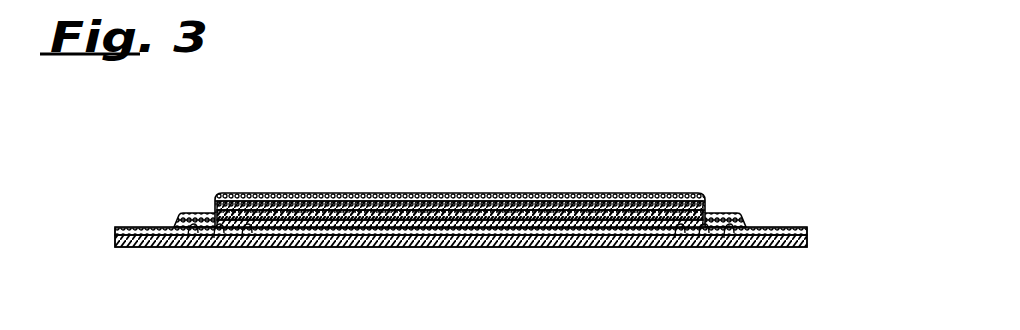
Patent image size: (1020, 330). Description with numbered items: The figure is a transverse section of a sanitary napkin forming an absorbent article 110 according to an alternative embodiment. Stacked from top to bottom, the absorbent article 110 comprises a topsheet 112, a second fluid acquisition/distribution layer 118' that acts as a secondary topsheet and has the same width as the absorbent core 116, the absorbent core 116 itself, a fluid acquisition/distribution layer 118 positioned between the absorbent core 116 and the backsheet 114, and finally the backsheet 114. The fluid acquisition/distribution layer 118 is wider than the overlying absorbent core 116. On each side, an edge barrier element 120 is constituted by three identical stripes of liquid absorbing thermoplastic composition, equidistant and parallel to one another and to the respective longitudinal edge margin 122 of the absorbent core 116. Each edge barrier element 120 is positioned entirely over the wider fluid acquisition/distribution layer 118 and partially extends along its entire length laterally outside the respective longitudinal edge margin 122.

The absorbent article 110 is at (781, 151).
The topsheet 112 is at (298, 193).
The backsheet 114 is at (563, 244).
The absorbent core 116 is at (594, 214).
The fluid acquisition/distribution layer 118 is at (460, 272).
The second fluid acquisition/distribution layer 118' is at (460, 151).
The edge barrier element 120 is at (245, 238).
The longitudinal edge margin 122 is at (211, 210).